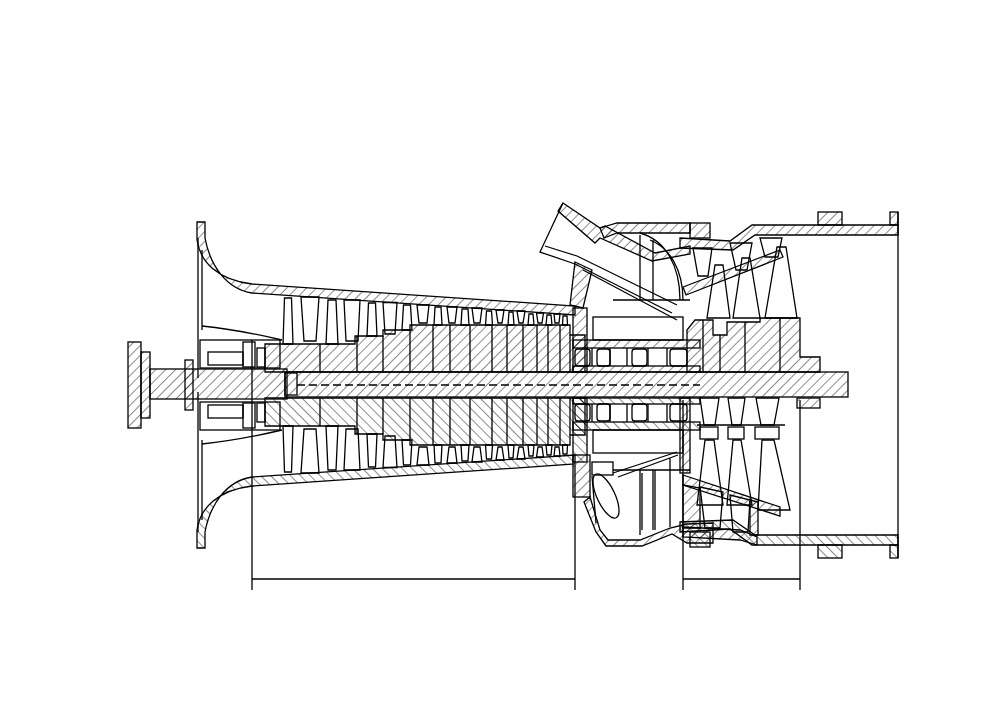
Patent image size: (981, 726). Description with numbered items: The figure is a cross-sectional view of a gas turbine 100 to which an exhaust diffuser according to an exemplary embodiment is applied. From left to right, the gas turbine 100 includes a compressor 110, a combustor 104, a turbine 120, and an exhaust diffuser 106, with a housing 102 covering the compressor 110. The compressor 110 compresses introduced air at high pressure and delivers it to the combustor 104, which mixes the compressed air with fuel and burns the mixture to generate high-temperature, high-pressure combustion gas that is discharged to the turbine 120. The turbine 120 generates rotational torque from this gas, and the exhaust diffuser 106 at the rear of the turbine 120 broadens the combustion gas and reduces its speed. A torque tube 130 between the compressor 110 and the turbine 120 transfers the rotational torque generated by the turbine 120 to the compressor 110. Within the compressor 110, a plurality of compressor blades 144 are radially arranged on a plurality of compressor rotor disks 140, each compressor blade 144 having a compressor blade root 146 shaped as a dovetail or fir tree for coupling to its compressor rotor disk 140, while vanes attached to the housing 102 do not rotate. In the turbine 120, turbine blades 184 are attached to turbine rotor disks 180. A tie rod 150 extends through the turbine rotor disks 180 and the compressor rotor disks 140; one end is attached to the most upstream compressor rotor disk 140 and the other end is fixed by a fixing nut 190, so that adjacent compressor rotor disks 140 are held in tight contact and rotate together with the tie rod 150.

The gas turbine 100 is at (861, 76).
The housing 102 is at (426, 270).
The combustor 104 is at (569, 197).
The exhaust diffuser 106 is at (866, 205).
The compressor 110 is at (413, 465).
The turbine 120 is at (741, 495).
The torque tube 130 is at (590, 333).
The compressor rotor disks 140 is at (330, 287).
The compressor blades 144 is at (340, 287).
The compressor blade root 146 is at (350, 293).
The tie rod 150 is at (203, 418).
The turbine rotor disks 180 is at (752, 296).
The turbine blades 184 is at (780, 240).
The fixing nut 190 is at (820, 365).